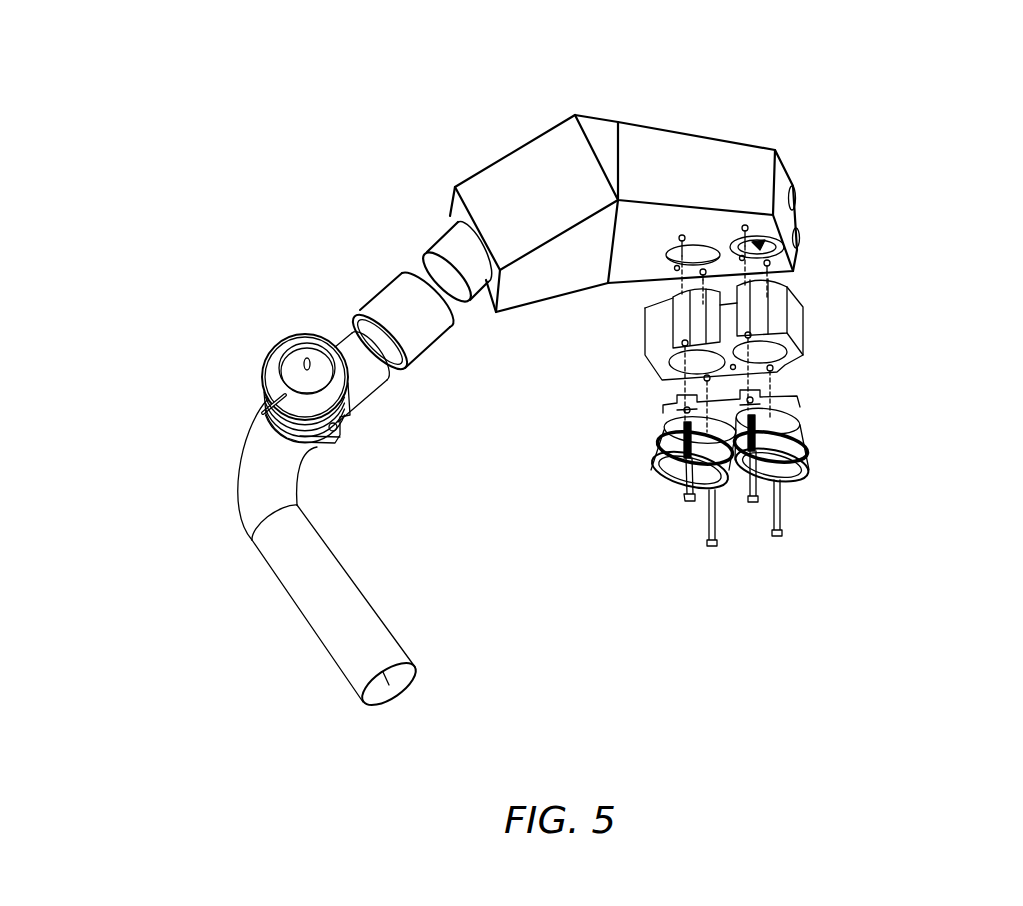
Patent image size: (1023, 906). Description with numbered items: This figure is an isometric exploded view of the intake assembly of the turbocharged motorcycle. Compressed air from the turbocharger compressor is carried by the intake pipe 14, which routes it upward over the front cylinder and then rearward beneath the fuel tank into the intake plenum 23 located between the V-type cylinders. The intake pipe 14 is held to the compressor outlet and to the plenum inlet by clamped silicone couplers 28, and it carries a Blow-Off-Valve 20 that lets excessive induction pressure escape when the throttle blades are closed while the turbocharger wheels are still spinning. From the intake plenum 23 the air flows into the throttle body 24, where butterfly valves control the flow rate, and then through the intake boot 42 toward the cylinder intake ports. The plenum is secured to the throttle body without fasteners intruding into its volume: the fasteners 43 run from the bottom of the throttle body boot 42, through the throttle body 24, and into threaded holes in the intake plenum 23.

The intake pipe 14 is at (312, 563).
The Blow-Off-Valve 20 is at (290, 368).
The intake plenum 23 is at (680, 173).
The throttle body 24 is at (800, 317).
The clamped silicone couplers 28 is at (403, 320).
The intake boot 42 is at (797, 422).
The fasteners 43 is at (718, 548).